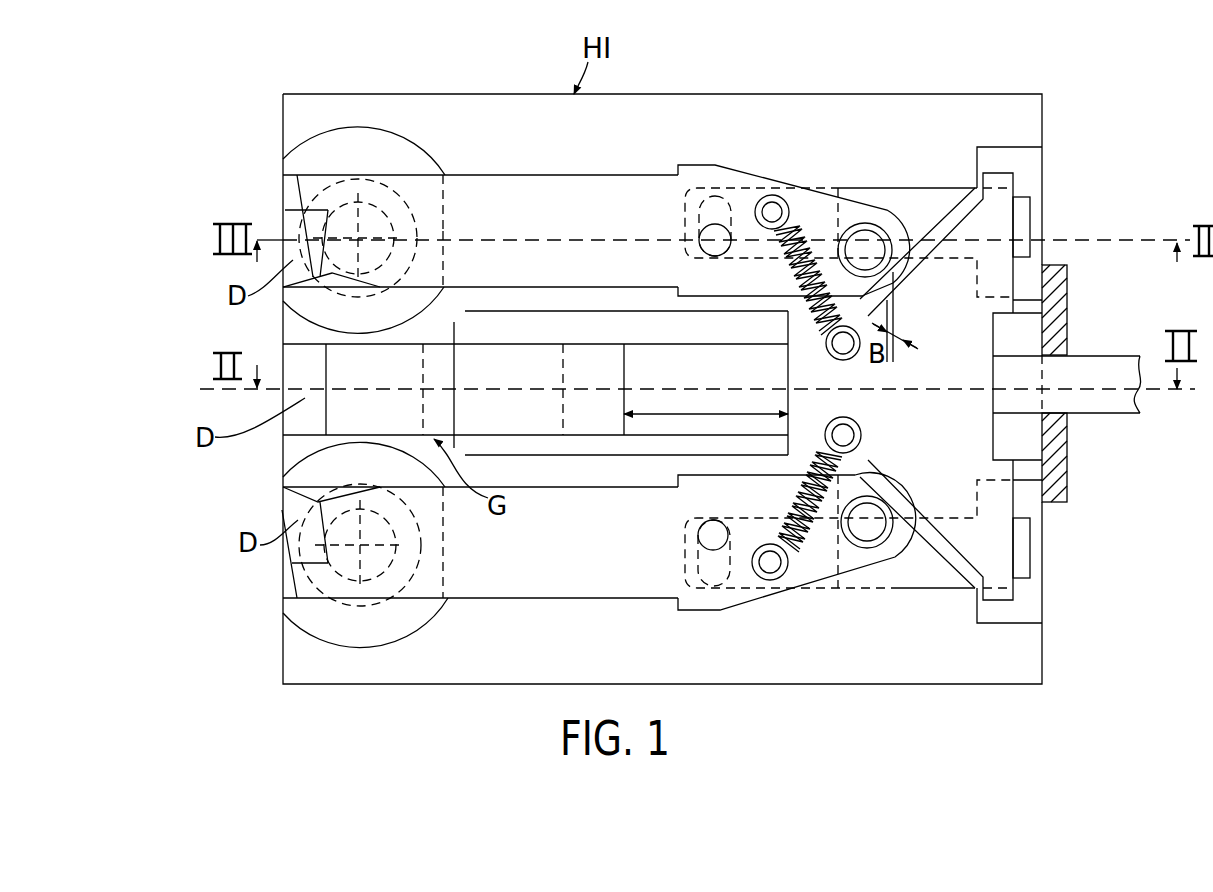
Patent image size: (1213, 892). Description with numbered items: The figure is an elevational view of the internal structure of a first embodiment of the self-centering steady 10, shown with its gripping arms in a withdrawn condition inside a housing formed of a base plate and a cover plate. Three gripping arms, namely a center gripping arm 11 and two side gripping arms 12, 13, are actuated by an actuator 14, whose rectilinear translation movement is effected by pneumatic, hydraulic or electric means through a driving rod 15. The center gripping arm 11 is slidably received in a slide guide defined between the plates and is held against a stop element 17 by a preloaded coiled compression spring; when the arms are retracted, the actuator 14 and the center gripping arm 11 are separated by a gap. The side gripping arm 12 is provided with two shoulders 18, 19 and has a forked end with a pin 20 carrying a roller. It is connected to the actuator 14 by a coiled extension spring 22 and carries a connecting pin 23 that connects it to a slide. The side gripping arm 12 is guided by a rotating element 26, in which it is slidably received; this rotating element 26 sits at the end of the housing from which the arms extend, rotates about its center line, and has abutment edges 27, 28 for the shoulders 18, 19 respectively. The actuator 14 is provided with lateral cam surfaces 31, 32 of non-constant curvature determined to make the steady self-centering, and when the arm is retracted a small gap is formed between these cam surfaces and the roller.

The self-centering steady 10 is at (192, 195).
The center gripping arm 11 is at (365, 408).
The side gripping arm 12 is at (462, 205).
The side gripping arm 13 is at (454, 572).
The actuator 14 is at (945, 372).
The driving rod 15 is at (1088, 403).
The stop element 17 is at (1062, 343).
The shoulder 18 is at (683, 164).
The shoulder 19 is at (680, 293).
The pin 20 is at (868, 250).
The coiled extension spring 22 is at (808, 238).
The connecting pin 23 is at (716, 240).
The rotating element 26 is at (333, 152).
The abutment edge 27 is at (443, 172).
The abutment edge 28 is at (443, 289).
The lateral cam surface 31 is at (945, 222).
The lateral cam surface 32 is at (945, 548).